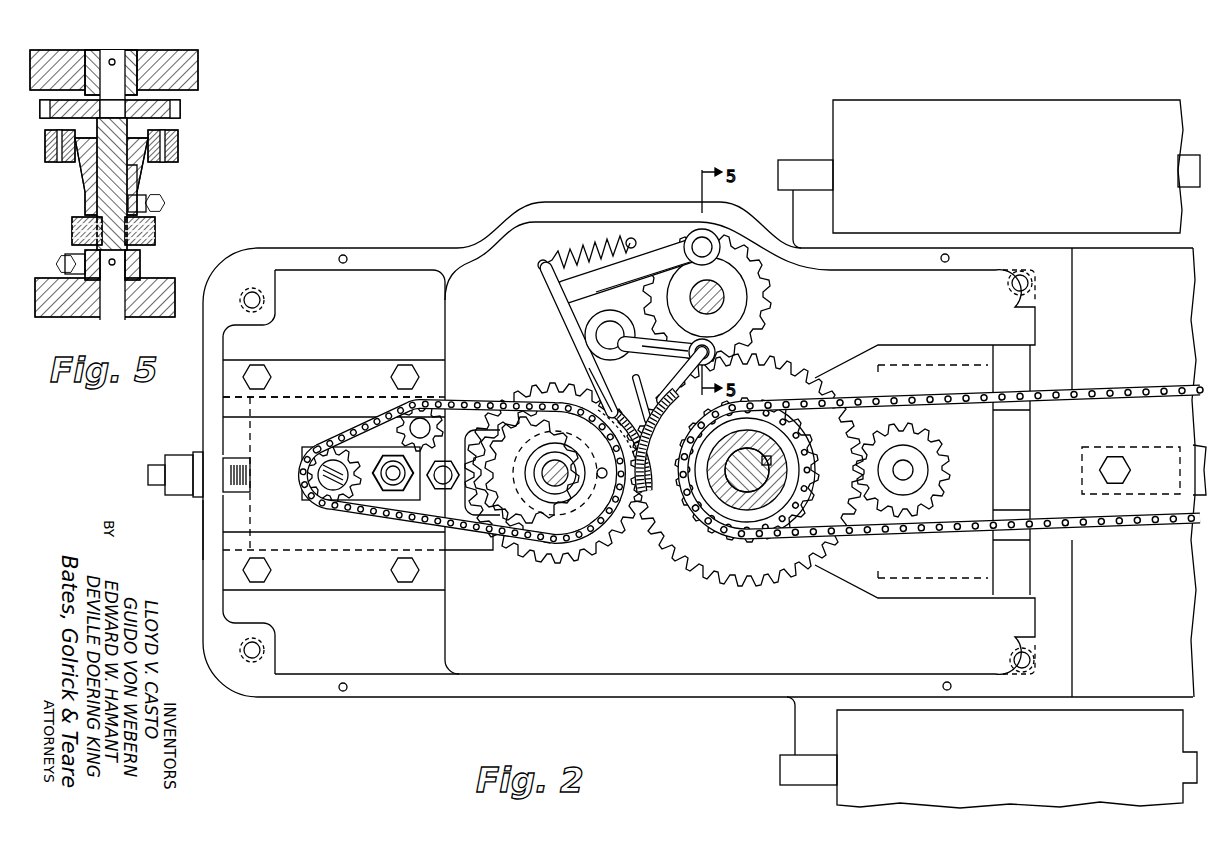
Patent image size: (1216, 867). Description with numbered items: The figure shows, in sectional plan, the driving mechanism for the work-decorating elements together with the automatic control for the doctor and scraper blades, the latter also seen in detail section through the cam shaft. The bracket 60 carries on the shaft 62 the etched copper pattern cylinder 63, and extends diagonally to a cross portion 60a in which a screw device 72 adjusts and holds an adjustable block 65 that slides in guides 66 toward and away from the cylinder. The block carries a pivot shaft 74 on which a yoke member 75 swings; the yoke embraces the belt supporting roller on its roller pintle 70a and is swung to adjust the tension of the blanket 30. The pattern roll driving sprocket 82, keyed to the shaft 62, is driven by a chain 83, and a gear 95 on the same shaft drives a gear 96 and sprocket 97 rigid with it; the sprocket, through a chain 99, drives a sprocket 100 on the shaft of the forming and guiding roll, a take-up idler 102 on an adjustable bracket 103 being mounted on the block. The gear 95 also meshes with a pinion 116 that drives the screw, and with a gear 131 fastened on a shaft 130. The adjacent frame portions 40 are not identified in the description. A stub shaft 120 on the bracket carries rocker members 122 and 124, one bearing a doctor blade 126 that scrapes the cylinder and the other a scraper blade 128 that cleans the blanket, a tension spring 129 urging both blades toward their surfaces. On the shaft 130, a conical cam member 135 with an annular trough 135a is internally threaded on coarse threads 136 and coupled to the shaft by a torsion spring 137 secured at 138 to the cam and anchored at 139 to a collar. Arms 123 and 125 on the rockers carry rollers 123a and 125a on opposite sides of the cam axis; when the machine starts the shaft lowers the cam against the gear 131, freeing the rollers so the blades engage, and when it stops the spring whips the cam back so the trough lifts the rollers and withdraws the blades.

In FIG. 2, the blanket 30 is at (634, 470).
In FIG. 2, the frame member 40 is at (1015, 454).
In FIG. 2, the bracket 60 is at (634, 698).
In FIG. 2, the cross portion 60a is at (210, 516).
In FIG. 2, the shaft 62 is at (745, 492).
In FIG. 2, the pattern cylinder 63 is at (640, 490).
In FIG. 2, the adjustable block 65 is at (393, 495).
In FIG. 2, the guides 66 is at (336, 397).
In FIG. 2, the roller pintle 70a is at (557, 482).
In FIG. 2, the screw device 72 is at (160, 462).
In FIG. 2, the pivot shaft 74 is at (443, 488).
In FIG. 2, the yoke member 75 is at (555, 455).
In FIG. 2, the pattern roll driving sprocket 82 is at (805, 458).
In FIG. 2, the chain 83 is at (1118, 396).
In FIG. 2, the gear 95 is at (692, 558).
In FIG. 2, the gear 96 is at (590, 548).
In FIG. 2, the sprocket 97 is at (518, 525).
In FIG. 2, the chain 99 is at (520, 405).
In FIG. 2, the sprocket 100 is at (340, 505).
In FIG. 2, the idler 102 is at (438, 423).
In FIG. 2, the adjustable bracket 103 is at (385, 447).
In FIG. 2, the pinion 116 is at (935, 455).
In FIG. 2, the stub shaft 120 is at (596, 335).
In FIG. 2, the rocker member 122 is at (637, 392).
In FIG. 2, the arm 123 is at (672, 358).
In FIG. 2, the roller 123a is at (724, 345).
In FIG. 5, the roller 123a is at (180, 143).
In FIG. 2, the rocker member 124 is at (585, 352).
In FIG. 2, the arm 125 is at (665, 255).
In FIG. 2, the roller 125a is at (712, 238).
In FIG. 5, the roller 125a is at (52, 162).
In FIG. 2, the doctor blade 126 is at (664, 396).
In FIG. 2, the scraper blade 128 is at (650, 424).
In FIG. 2, the tension spring 129 is at (576, 243).
In FIG. 2, the shaft 130 is at (722, 298).
In FIG. 5, the shaft 130 is at (113, 305).
In FIG. 2, the gear 131 is at (770, 318).
In FIG. 5, the gear 131 is at (168, 108).
In FIG. 5, the conical cam member 135 is at (140, 180).
In FIG. 5, the annular trough 135a is at (152, 163).
In FIG. 5, the coarse threads 136 is at (110, 180).
In FIG. 5, the torsion spring 137 is at (152, 232).
In FIG. 5, the spring attachment 138 is at (164, 205).
In FIG. 5, the spring anchor 139 is at (64, 264).